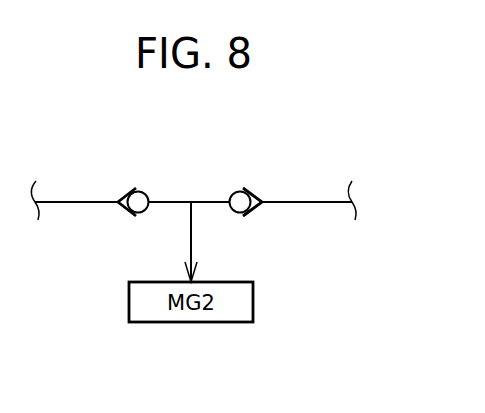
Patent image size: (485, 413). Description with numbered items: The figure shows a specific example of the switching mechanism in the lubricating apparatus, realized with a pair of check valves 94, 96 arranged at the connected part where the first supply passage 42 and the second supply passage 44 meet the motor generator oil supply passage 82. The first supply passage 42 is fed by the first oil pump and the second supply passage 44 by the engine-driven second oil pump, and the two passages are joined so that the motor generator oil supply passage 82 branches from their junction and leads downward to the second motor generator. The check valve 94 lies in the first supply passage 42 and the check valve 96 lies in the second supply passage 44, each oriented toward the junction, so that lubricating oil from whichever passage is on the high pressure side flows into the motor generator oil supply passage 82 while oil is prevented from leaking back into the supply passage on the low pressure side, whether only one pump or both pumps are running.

The first supply passage 42 is at (68, 202).
The second supply passage 44 is at (317, 202).
The MG2 oil supply passage 82 is at (193, 246).
The check valve 94 is at (138, 200).
The check valve 96 is at (245, 199).